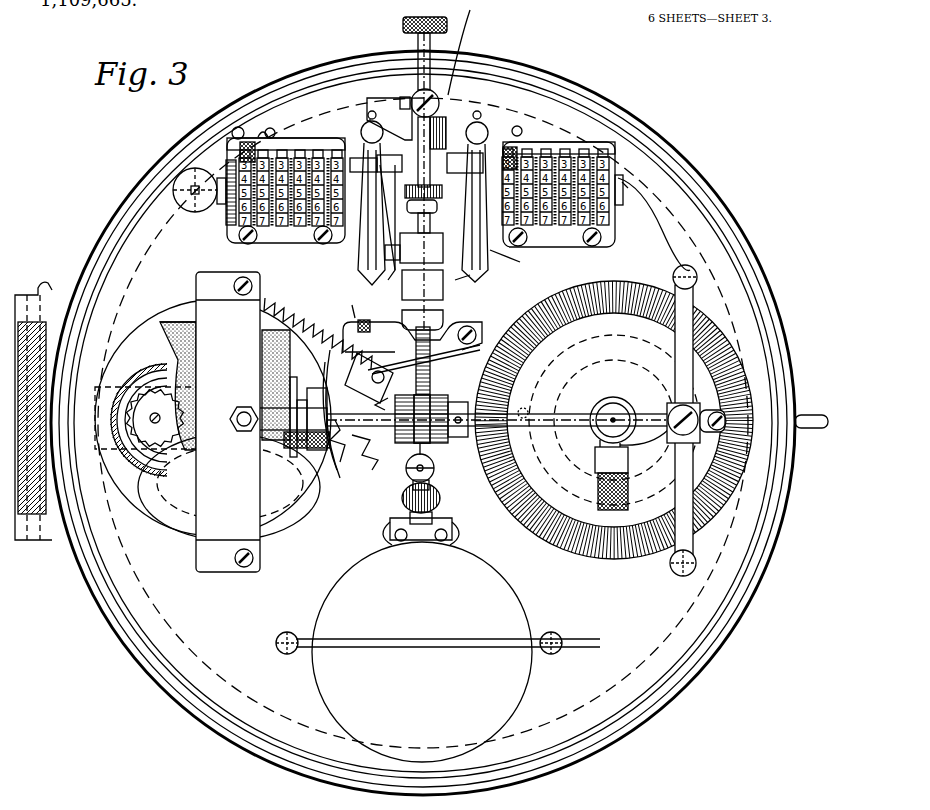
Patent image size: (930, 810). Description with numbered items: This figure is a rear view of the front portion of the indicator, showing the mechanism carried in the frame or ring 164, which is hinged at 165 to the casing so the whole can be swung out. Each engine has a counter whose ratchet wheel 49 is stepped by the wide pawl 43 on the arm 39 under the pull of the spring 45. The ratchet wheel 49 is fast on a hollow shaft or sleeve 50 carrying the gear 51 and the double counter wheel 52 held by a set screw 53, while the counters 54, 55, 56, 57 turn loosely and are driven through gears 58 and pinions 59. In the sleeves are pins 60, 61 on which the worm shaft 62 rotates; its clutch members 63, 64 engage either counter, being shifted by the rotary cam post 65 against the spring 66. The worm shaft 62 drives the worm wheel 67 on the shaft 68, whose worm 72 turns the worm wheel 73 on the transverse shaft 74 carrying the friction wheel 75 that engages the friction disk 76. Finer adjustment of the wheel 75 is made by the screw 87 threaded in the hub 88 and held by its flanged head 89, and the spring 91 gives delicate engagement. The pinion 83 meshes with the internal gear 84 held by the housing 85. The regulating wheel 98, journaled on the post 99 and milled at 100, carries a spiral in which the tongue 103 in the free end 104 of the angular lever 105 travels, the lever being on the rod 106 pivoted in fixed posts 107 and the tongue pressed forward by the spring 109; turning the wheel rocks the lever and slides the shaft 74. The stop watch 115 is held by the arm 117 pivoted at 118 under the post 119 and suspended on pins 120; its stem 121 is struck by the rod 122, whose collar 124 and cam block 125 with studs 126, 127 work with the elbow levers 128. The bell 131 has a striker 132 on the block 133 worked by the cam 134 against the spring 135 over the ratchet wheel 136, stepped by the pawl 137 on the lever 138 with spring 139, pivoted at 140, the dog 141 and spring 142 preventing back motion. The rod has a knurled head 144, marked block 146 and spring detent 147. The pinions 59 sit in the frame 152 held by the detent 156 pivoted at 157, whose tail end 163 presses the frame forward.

The arm 39 is at (485, 140).
The wide pawl 43 is at (414, 186).
The spring 45 is at (530, 260).
The ratchet wheel 49 is at (361, 138).
The shaft or sleeve 50 is at (225, 225).
The gear 51 is at (232, 228).
The double counter wheel 52 is at (248, 228).
The set screw 53 is at (268, 228).
The counter 54 is at (285, 230).
The counter 55 is at (302, 230).
The counter 56 is at (320, 245).
The counter 57 is at (340, 245).
The gears 58 is at (300, 245).
The pinions 59 is at (325, 150).
The longitudinally movable pin 60 is at (218, 205).
The longitudinally movable pin 61 is at (630, 190).
The worm shaft 62 is at (455, 150).
The clutch member 63 is at (390, 172).
The clutch member 64 is at (490, 150).
The rotary cam post 65 is at (172, 190).
The spring 66 is at (630, 218).
The worm wheel 67 is at (345, 305).
The shaft 68 is at (470, 275).
The worm 72 is at (436, 440).
The worm wheel 73 is at (440, 398).
The transverse shaft 74 is at (565, 416).
The friction wheel 75 is at (307, 385).
The friction disk 76 is at (190, 318).
The pinion 83 is at (243, 405).
The internal gear 84 is at (150, 390).
The housing 85 is at (150, 355).
The screw 87 is at (296, 520).
The enlarged hub 88 is at (322, 470).
The flanged head 89 is at (278, 455).
The spring 91 is at (228, 422).
The regulating wheel or plate 98 is at (640, 558).
The post 99 is at (622, 400).
The milled portion 100 is at (740, 505).
The tongue 103 is at (595, 455).
The free end of lever 104 is at (540, 495).
The angular lever 105 is at (660, 560).
The rod 106 is at (690, 313).
The fixed posts 107 is at (680, 266).
The spring 109 is at (560, 555).
The stop watch 115 is at (505, 680).
The arm 117 is at (456, 641).
The pivot 118 is at (282, 633).
The post 119 is at (556, 634).
The pins 120 is at (398, 527).
The stem 121 is at (440, 498).
The rod or plunger 122 is at (430, 52).
The collar 124 is at (443, 312).
The cam block 125 is at (443, 293).
The stud 126 is at (414, 240).
The stud 127 is at (475, 270).
The elbow-shaped levers 128 is at (372, 265).
The bell 131 is at (300, 515).
The striker rod or spring 132 is at (330, 448).
The block 133 is at (356, 358).
The cam 134 is at (406, 470).
The spring 135 is at (318, 333).
The operating ratchet wheel 136 is at (372, 470).
The pawl 137 is at (334, 416).
The lever 138 is at (388, 322).
The spring 139 is at (372, 315).
The pivot 140 is at (478, 333).
The dog 141 is at (399, 394).
The spring 142 is at (455, 352).
The knurled head 144 is at (403, 24).
The block 146 is at (478, 47).
The spring detent 147 is at (385, 112).
The frame 152 is at (265, 145).
The detent 156 is at (262, 128).
The pivot 157 is at (272, 128).
The tail end 163 is at (333, 140).
The frame or ring 164 is at (145, 632).
The hinge 165 is at (40, 545).